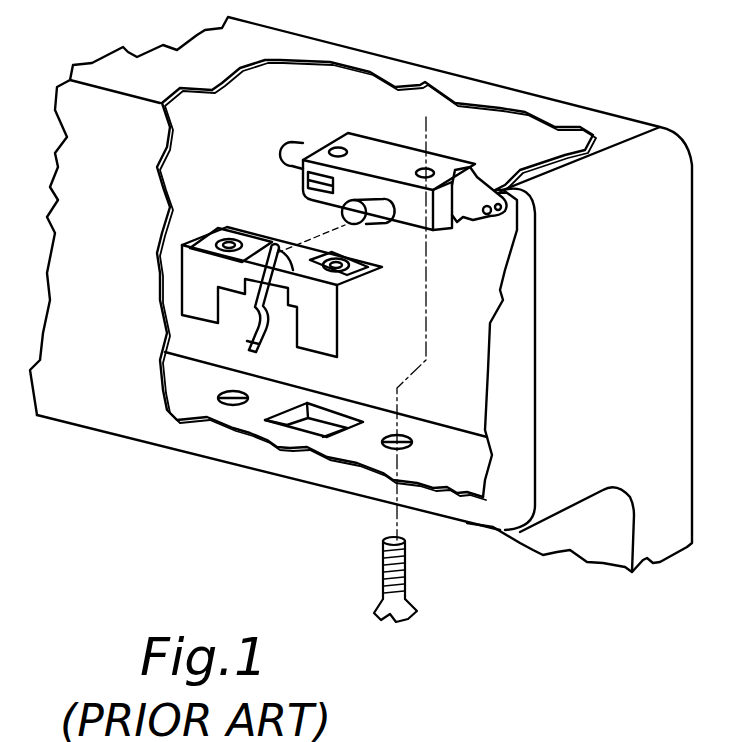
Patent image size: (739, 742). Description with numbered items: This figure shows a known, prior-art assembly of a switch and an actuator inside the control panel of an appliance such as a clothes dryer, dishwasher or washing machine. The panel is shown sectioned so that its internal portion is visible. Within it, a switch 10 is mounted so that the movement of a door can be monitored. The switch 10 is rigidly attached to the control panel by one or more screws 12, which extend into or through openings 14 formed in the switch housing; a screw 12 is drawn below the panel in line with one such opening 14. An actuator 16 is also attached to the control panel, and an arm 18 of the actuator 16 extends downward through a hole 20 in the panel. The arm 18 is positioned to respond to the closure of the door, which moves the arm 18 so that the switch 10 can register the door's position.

The switch 10 is at (370, 143).
The screws 12 is at (413, 618).
The openings 14 is at (435, 167).
The actuator 16 is at (203, 273).
The arm 18 is at (245, 350).
The hole 20 is at (307, 420).